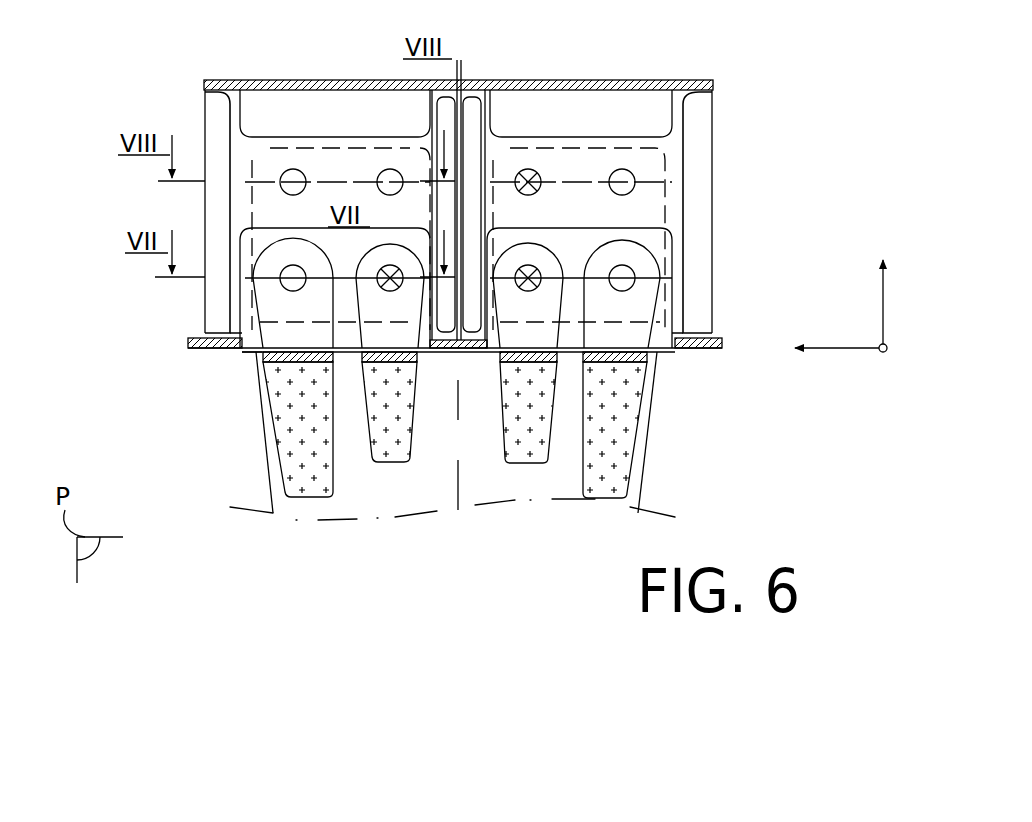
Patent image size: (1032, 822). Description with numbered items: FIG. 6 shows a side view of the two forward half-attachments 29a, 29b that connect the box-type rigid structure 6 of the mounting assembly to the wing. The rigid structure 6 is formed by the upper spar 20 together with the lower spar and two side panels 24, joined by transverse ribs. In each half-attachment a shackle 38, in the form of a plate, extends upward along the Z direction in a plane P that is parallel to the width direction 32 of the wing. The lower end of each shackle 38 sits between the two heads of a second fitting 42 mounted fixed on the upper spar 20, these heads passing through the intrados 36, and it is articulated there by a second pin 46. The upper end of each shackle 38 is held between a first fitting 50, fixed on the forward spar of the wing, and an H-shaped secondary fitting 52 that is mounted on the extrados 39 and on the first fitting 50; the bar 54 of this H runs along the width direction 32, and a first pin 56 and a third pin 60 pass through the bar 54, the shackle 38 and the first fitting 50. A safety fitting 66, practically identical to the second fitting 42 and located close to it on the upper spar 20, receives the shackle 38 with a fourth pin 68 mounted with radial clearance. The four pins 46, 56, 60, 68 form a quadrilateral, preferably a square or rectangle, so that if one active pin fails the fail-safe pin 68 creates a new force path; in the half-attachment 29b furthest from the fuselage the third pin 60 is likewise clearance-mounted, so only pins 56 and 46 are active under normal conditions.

The rigid structure 6 is at (652, 435).
The upper spar 20 is at (444, 353).
The side panel 24 is at (270, 498).
The forward half-attachment 29a is at (180, 100).
The forward half-attachment 29b is at (722, 115).
The width direction 32 is at (843, 350).
The intrados 36 is at (195, 350).
The shackle 38 is at (245, 240).
The extrados 39 is at (630, 80).
The second fitting 42 is at (255, 350).
The second pin 46 is at (287, 288).
The first fitting 50 is at (278, 100).
The secondary fitting 52 is at (228, 212).
The bar of the H 54 is at (333, 155).
The first pin 56 is at (290, 172).
The third pin 60 is at (380, 172).
The safety fitting 66 is at (385, 466).
The fourth pin 68 is at (535, 272).